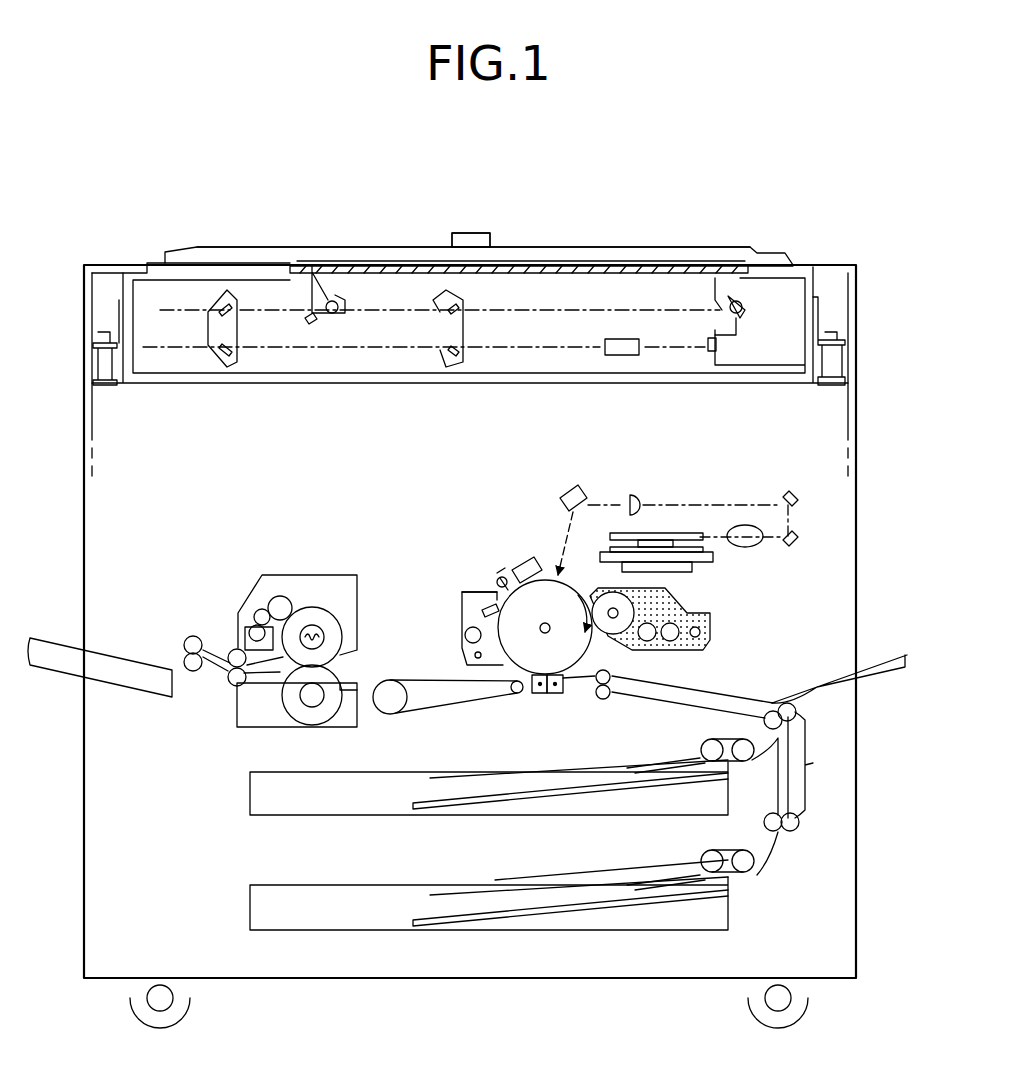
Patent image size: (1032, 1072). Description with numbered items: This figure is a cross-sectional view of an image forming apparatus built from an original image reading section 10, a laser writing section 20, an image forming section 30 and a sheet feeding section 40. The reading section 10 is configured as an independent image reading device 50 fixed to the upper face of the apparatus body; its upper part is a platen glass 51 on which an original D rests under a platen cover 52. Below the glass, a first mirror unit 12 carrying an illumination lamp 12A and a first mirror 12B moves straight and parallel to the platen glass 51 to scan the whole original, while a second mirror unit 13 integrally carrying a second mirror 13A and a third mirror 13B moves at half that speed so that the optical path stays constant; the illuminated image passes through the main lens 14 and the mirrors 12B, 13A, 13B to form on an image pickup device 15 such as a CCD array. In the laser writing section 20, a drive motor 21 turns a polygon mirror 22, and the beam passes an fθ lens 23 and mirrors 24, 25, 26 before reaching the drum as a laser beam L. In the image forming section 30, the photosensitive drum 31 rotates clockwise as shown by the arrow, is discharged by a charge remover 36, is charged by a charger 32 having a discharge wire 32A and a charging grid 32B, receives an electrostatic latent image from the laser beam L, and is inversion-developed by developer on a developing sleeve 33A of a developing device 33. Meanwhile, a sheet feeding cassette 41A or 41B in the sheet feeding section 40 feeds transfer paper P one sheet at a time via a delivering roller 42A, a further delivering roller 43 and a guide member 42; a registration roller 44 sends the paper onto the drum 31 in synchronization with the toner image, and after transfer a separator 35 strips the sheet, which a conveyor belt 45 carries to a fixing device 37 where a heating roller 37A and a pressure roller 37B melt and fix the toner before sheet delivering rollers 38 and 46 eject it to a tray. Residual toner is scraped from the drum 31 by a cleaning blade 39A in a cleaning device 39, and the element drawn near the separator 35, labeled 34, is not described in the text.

The original image reading section 10 is at (420, 333).
The first mirror unit 12 is at (355, 316).
The illumination lamp 12A is at (347, 322).
The first mirror 12B is at (307, 316).
The second mirror unit 13 is at (215, 361).
The second mirror 13A is at (210, 312).
The third mirror 13B is at (238, 355).
The main lens 14 is at (624, 357).
The image pickup device 15 is at (709, 351).
The original D is at (388, 260).
The platen glass 51 is at (528, 270).
The platen cover 52 is at (642, 248).
The image reading device 50 is at (797, 258).
The laser writing section 20 is at (637, 513).
The drive motor 21 is at (692, 568).
The polygon mirror 22 is at (663, 532).
The fθ lens 23 is at (763, 547).
The mirror 24 is at (795, 540).
The mirror 25 is at (793, 495).
The mirror 26 is at (572, 488).
The laser beam L is at (612, 503).
The image forming section 30 is at (574, 589).
The photosensitive drum 31 is at (549, 578).
The charger 32 is at (522, 560).
The discharge wire 32A is at (495, 567).
The charging grid 32B is at (535, 613).
The developing device 33 is at (712, 622).
The developing sleeve 33A is at (663, 607).
The transfer device 34 is at (553, 694).
The separator 35 is at (538, 694).
The charge remover 36 is at (497, 578).
The fixing device 37 is at (283, 653).
The heating roller 37A is at (313, 607).
The pressure roller 37B is at (318, 726).
The sheet delivering roller 38 is at (230, 650).
The cleaning device 39 is at (462, 635).
The cleaning blade 39A is at (462, 592).
The sheet feeding section 40 is at (790, 847).
The sheet feeding cassette 41A is at (403, 772).
The sheet feeding cassette 41B is at (344, 885).
The guide member 42 is at (777, 788).
The delivering roller 42A is at (700, 752).
The delivering roller 43 is at (807, 767).
The registration roller 44 is at (606, 699).
The conveyor belt 45 is at (410, 682).
The sheet delivering roller 46 is at (185, 645).
The transfer paper P is at (560, 785).